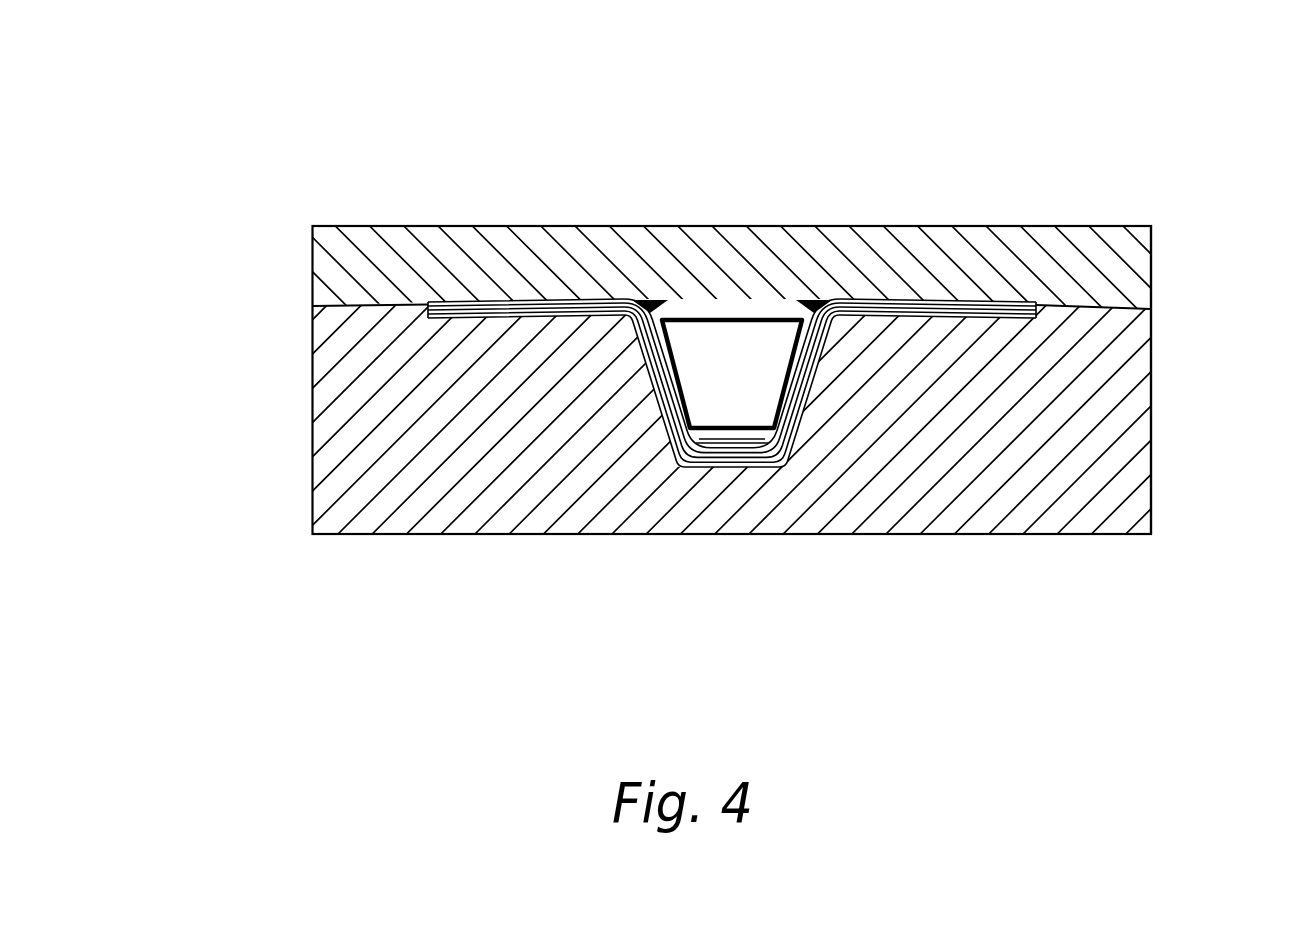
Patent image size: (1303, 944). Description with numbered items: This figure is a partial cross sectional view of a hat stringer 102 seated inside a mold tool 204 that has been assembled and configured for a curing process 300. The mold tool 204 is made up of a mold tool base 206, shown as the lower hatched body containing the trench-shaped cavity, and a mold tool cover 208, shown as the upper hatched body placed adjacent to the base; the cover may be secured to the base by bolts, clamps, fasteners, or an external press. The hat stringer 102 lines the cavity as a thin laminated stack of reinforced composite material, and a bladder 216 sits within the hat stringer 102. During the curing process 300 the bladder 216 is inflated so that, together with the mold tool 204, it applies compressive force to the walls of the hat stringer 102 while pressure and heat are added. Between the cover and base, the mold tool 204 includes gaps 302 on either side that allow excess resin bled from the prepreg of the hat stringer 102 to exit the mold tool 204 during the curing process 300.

The curing process 300 is at (273, 80).
The hat stringer 102 is at (648, 290).
The mold tool 204 is at (1141, 180).
The mold tool base 206 is at (345, 527).
The mold tool cover 208 is at (338, 228).
The bladder 216 is at (780, 302).
The gaps 302 is at (288, 297).